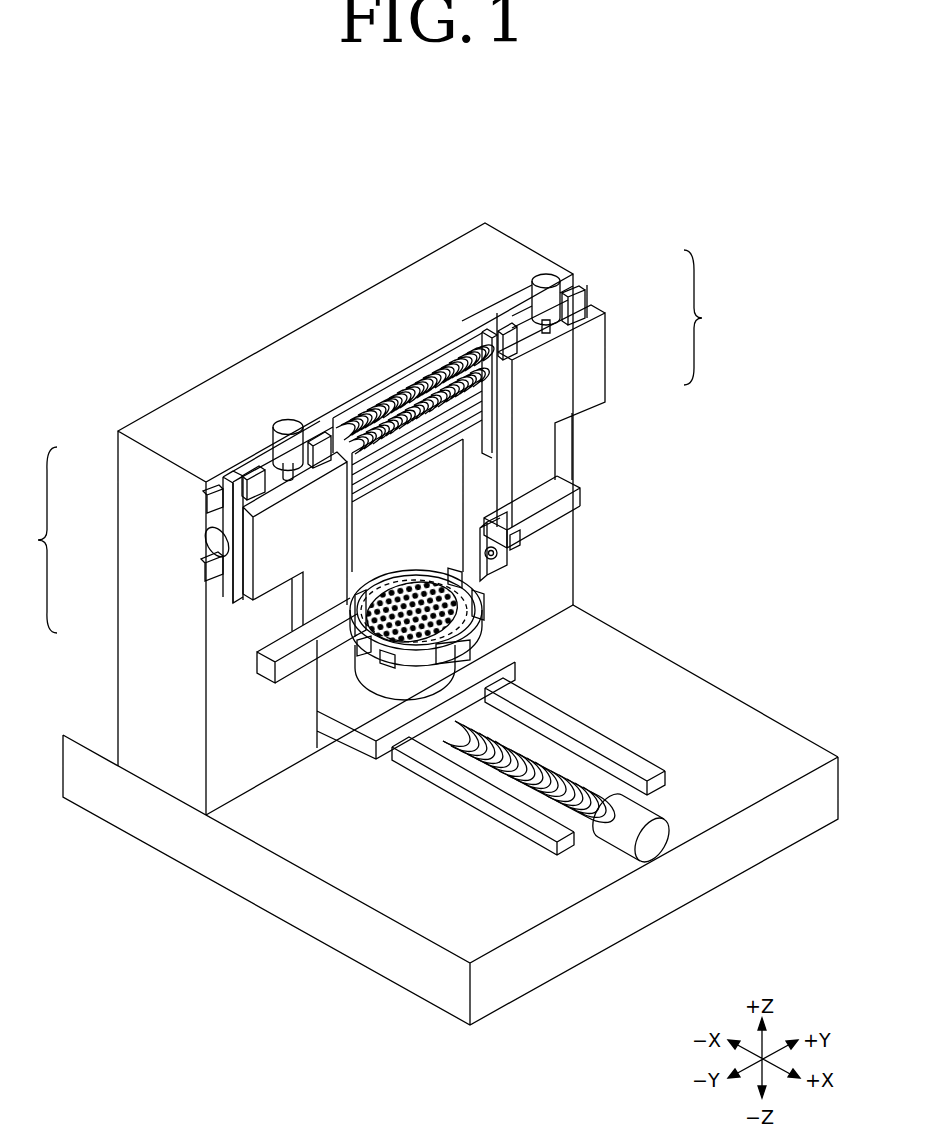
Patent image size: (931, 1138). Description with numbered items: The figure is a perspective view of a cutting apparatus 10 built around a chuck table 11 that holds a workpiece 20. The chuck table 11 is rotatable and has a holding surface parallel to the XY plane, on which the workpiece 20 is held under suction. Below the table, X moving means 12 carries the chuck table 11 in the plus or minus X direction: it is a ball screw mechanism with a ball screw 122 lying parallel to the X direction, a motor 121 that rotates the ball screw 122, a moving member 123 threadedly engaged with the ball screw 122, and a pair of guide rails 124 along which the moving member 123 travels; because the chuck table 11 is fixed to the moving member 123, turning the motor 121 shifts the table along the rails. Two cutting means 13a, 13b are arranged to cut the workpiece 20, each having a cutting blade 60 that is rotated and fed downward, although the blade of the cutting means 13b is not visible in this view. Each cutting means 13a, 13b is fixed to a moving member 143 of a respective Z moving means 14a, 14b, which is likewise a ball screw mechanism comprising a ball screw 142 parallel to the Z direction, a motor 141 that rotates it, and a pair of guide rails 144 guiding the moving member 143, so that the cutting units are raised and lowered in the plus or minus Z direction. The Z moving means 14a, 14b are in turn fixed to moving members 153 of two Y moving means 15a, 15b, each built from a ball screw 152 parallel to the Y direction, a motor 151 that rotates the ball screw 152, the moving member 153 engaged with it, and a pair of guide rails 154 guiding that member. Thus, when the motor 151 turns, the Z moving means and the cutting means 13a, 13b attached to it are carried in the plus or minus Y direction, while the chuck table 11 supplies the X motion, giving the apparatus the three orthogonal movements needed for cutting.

The cutting apparatus 10 is at (127, 360).
The chuck table 11 is at (383, 685).
The X moving means 12 is at (533, 754).
The motor 121 is at (662, 830).
The ball screw 122 is at (588, 797).
The moving member 123 is at (508, 678).
The guide rails 124 is at (477, 804).
The cutting means 13a is at (553, 523).
The cutting means 13b is at (290, 678).
The Z moving means 14a is at (607, 388).
The Z moving means 14b is at (253, 593).
The motor 141 is at (552, 283).
The ball screw 142 is at (560, 320).
The moving member 143 is at (598, 370).
The guide rails 144 is at (513, 320).
The Y moving means 15a is at (450, 372).
The Y moving means 15b is at (45, 557).
The motor 151 is at (208, 538).
The ball screw 152 is at (360, 425).
The moving member 153 is at (226, 588).
The guide rails 154 is at (207, 502).
The workpiece 20 is at (420, 573).
The cutting blade 60 is at (495, 578).